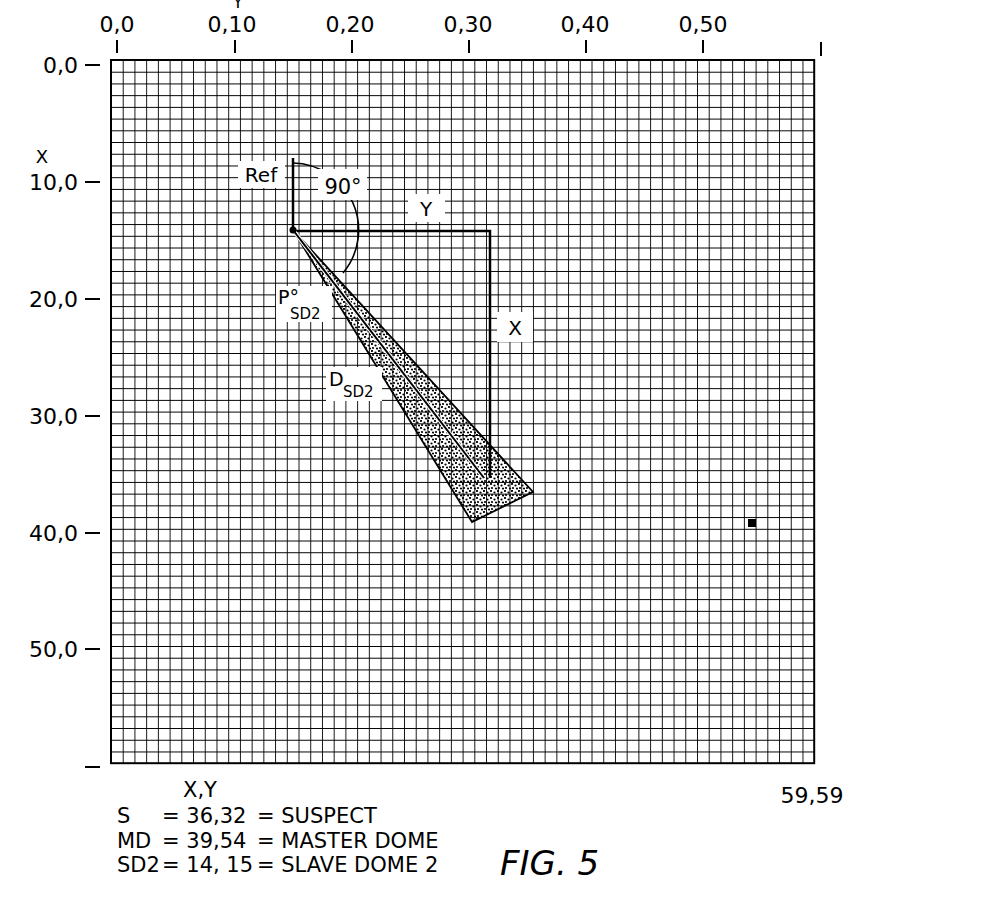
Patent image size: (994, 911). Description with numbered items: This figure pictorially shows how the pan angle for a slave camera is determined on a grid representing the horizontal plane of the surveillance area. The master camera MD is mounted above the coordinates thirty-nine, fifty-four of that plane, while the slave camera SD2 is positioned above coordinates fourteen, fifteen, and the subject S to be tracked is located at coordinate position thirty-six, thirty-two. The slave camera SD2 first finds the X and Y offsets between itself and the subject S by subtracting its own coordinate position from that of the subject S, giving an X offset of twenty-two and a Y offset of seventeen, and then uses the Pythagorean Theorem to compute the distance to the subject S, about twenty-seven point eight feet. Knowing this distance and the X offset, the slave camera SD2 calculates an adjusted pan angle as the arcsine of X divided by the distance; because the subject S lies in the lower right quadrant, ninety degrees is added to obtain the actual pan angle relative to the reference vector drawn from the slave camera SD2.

The subject S is at (492, 490).
The master camera MD is at (773, 541).
The slave camera SD2 is at (265, 248).